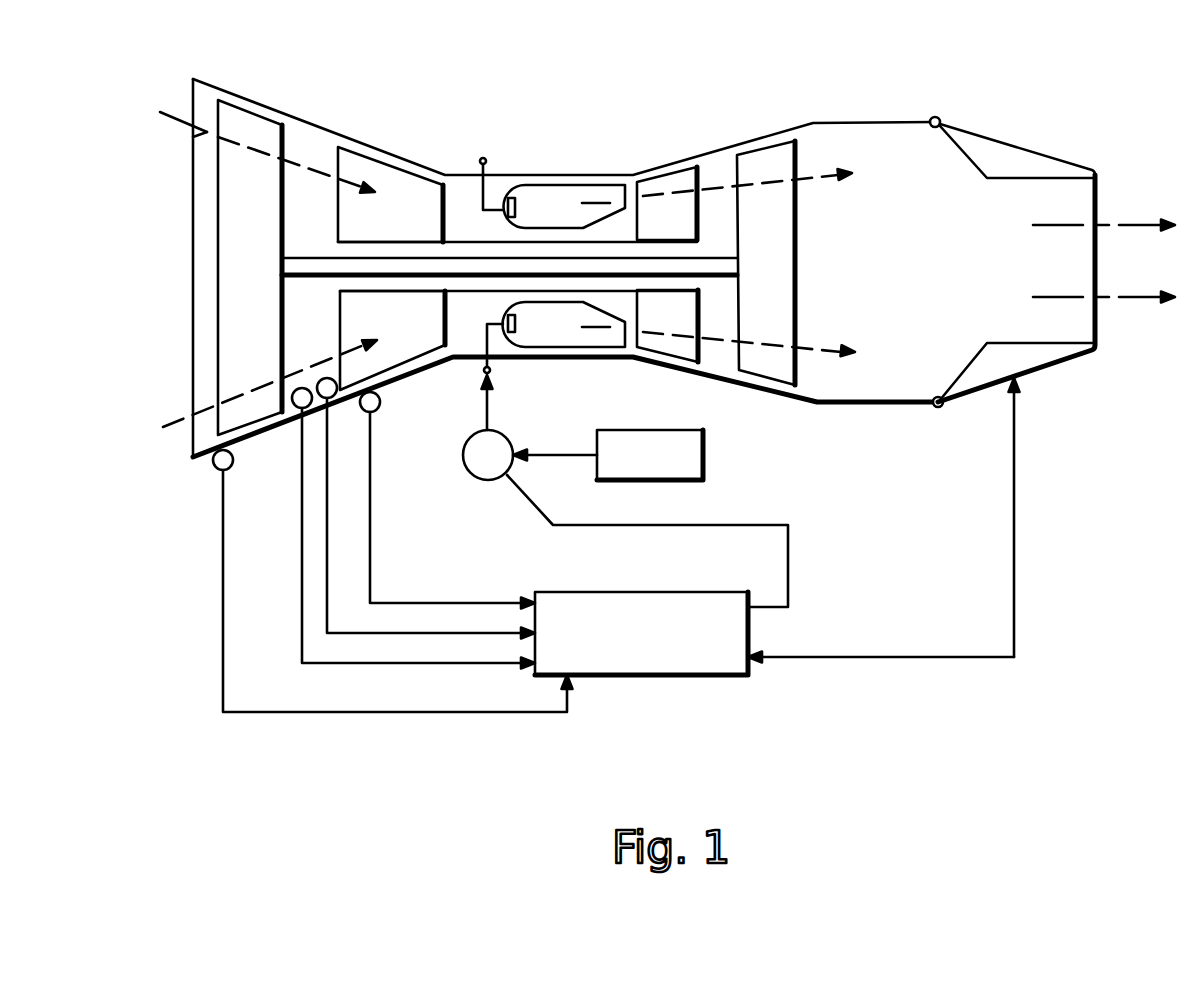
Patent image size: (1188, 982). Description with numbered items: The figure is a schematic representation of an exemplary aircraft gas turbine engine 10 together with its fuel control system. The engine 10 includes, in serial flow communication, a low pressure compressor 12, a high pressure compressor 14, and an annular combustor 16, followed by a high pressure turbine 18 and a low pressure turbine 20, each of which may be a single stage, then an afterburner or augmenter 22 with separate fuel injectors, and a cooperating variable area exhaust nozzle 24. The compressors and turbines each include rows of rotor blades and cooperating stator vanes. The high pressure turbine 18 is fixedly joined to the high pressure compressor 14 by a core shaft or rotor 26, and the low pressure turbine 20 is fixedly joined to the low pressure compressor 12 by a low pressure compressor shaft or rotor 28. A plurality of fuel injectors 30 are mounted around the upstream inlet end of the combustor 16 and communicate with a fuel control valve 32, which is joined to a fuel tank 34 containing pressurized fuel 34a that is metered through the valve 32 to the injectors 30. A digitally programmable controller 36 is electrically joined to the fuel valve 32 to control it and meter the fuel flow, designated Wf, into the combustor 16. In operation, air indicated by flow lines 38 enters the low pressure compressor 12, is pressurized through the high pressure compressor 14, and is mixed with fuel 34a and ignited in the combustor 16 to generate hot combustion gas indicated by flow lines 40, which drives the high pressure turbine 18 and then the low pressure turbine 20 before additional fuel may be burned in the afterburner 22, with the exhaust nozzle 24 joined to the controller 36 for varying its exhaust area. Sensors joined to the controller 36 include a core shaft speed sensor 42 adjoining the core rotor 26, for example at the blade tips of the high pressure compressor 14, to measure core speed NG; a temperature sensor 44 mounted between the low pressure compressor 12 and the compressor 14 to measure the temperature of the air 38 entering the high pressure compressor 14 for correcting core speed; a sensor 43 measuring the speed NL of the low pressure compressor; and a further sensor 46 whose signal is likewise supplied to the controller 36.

The gas turbine engine 10 is at (721, 93).
The low pressure compressor 12 is at (250, 108).
The high pressure compressor 14 is at (383, 167).
The annular combustor 16 is at (565, 185).
The high pressure turbine 18 is at (665, 178).
The low pressure turbine 20 is at (767, 158).
The afterburner 22 is at (873, 122).
The variable area exhaust nozzle 24 is at (1030, 150).
The core shaft 26 is at (461, 240).
The low pressure compressor shaft 28 is at (313, 258).
The fuel injectors 30 is at (483, 157).
The fuel control valve 32 is at (483, 480).
The fuel tank 34 is at (705, 445).
The fuel 34a is at (572, 455).
The digitally programmable controller 36 is at (667, 675).
The air flow lines 38 is at (190, 140).
The combustion gas flow lines 40 is at (828, 192).
The core shaft speed sensor 42 is at (380, 403).
The low pressure compressor speed sensor 43 is at (215, 467).
The temperature sensor 44 is at (297, 408).
The pressure sensor 46 is at (327, 378).